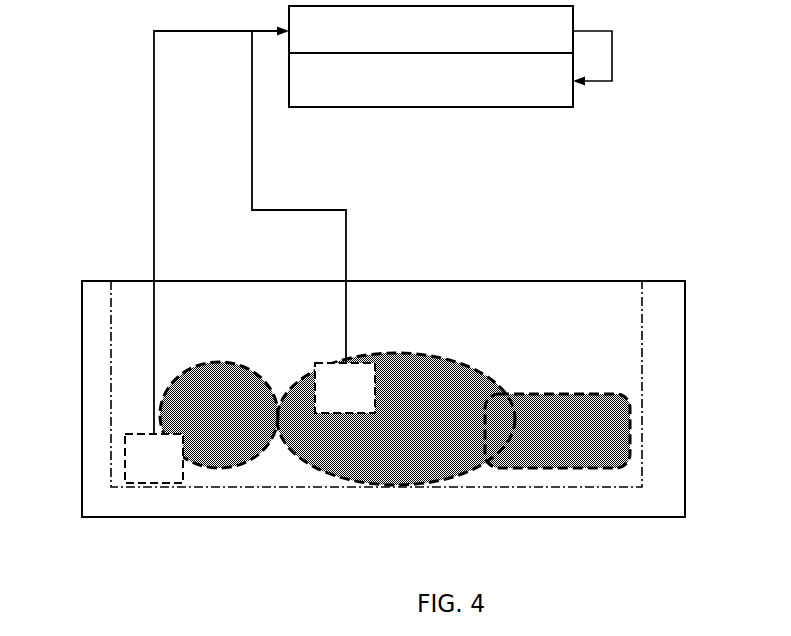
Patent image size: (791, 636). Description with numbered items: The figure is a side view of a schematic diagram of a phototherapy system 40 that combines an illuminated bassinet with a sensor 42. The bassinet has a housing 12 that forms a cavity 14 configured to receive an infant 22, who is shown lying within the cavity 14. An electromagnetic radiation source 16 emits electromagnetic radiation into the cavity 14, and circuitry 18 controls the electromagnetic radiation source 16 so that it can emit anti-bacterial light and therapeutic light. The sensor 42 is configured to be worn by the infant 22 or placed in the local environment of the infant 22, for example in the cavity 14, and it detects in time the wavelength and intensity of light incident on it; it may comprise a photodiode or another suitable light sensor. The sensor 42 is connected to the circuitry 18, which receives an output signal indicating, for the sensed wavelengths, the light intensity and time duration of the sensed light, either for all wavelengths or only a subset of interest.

The housing 12 is at (665, 398).
The cavity 14 is at (135, 317).
The electromagnetic radiation source 16 is at (519, 91).
The circuitry 18 is at (493, 43).
The infant 22 is at (403, 428).
The phototherapy system 40 is at (138, 42).
The sensor 42 is at (167, 471).